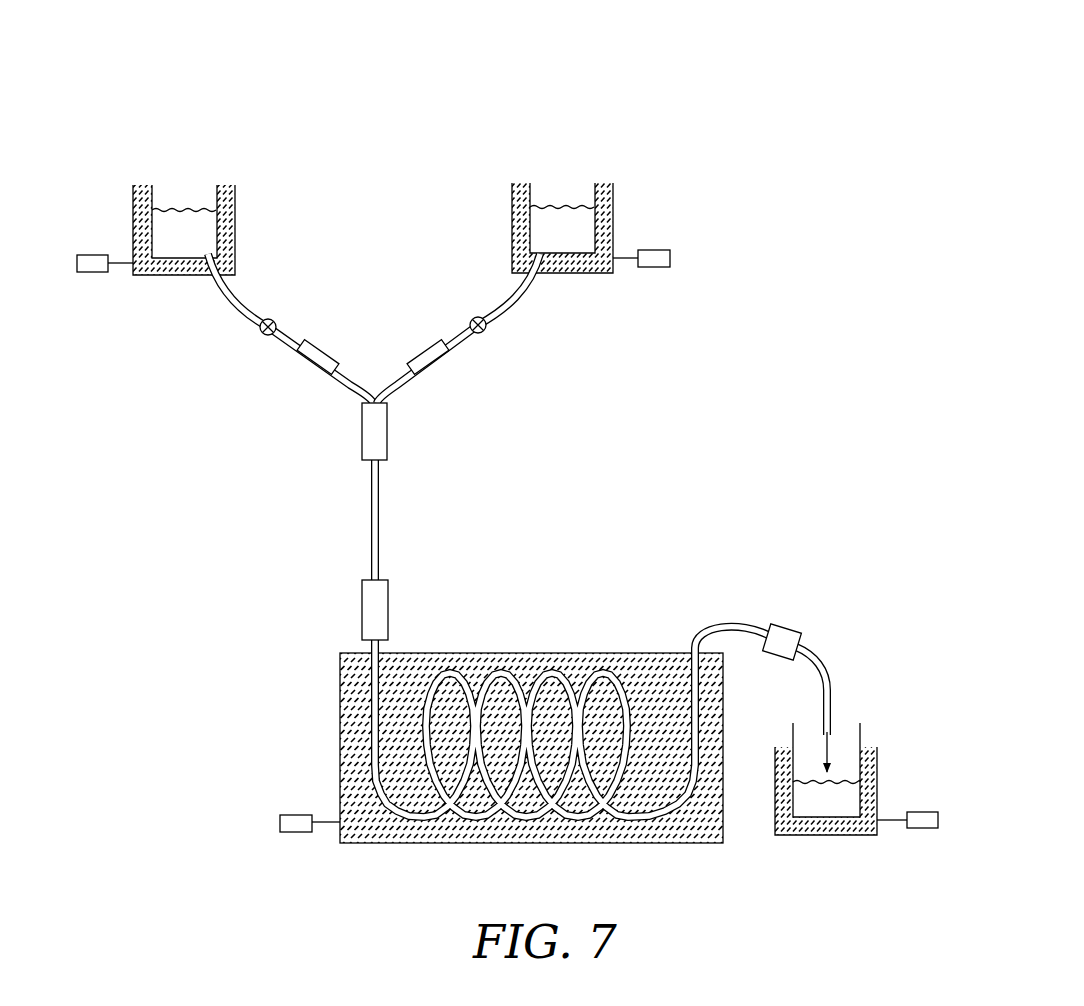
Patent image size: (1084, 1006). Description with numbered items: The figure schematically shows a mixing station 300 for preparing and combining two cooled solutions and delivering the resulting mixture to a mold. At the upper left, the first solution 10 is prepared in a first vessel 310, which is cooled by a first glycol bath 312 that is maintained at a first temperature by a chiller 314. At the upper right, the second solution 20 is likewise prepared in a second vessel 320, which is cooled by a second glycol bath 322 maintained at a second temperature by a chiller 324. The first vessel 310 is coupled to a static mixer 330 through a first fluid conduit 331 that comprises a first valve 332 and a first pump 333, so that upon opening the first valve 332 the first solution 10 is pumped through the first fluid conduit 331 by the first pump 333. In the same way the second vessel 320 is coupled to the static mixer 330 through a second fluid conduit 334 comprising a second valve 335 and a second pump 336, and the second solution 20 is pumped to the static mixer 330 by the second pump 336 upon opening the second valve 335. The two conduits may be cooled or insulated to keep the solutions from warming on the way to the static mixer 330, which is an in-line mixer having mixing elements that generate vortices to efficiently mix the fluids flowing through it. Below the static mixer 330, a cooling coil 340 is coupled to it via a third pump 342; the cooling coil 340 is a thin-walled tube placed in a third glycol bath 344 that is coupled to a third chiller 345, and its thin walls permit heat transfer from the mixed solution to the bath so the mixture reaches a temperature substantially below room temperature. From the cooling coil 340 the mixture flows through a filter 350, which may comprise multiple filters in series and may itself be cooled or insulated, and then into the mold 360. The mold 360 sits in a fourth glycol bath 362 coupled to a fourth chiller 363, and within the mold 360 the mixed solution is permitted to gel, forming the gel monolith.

The mixing station 300 is at (458, 122).
The first vessel 310 is at (224, 211).
The first solution 10 is at (207, 220).
The first glycol bath 312 is at (233, 222).
The chiller 314 is at (83, 255).
The second vessel 320 is at (614, 196).
The second solution 20 is at (585, 218).
The second glycol bath 322 is at (612, 218).
The chiller 324 is at (665, 248).
The first fluid conduit 331 is at (255, 370).
The first valve 332 is at (275, 318).
The first pump 333 is at (322, 347).
The second fluid conduit 334 is at (542, 375).
The second valve 335 is at (486, 334).
The second pump 336 is at (430, 347).
The static mixer 330 is at (388, 437).
The third pump 342 is at (388, 600).
The cooling coil 340 is at (462, 667).
The third glycol bath 344 is at (585, 653).
The third chiller 345 is at (294, 822).
The filter 350 is at (788, 633).
The mold 360 is at (858, 756).
The fourth glycol bath 362 is at (872, 770).
The fourth chiller 363 is at (919, 817).